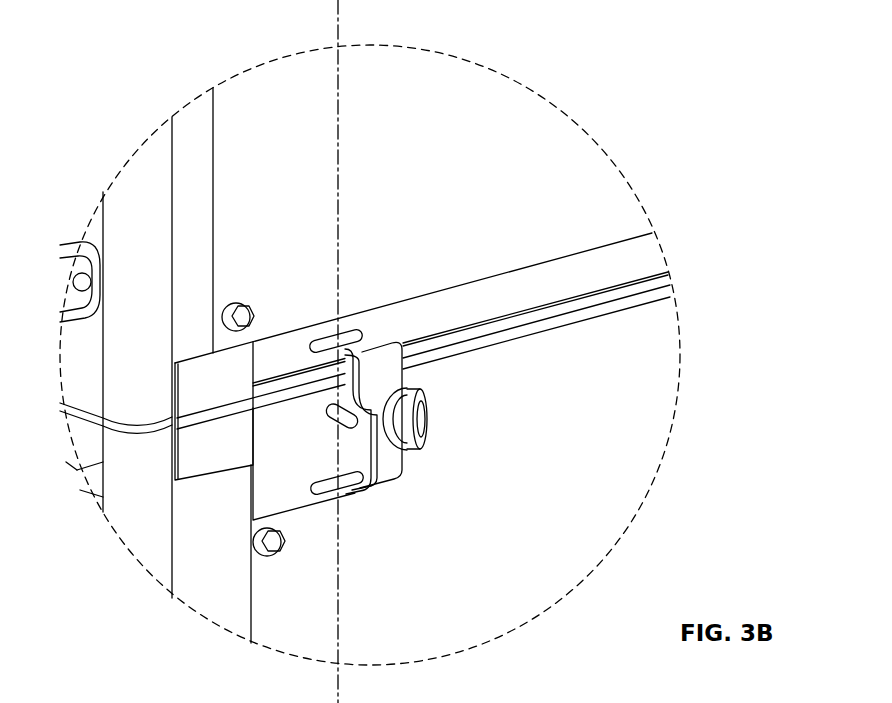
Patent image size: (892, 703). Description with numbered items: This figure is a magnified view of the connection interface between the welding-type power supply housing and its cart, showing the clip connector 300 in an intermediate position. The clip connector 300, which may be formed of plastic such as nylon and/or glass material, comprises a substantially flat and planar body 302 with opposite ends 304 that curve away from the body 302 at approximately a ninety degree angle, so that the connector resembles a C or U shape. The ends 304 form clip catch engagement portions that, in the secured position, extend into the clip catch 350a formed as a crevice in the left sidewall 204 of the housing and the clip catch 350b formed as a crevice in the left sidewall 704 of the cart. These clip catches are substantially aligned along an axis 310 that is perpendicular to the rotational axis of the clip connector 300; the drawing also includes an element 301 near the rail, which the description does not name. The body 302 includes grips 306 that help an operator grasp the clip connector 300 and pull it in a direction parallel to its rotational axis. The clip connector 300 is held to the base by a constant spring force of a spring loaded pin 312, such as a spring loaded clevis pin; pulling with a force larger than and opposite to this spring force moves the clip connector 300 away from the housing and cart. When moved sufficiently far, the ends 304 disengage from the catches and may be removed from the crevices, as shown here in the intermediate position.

The left sidewall 204 is at (538, 112).
The clip connector 300 is at (392, 392).
The rail 301 is at (626, 292).
The body 302 is at (392, 378).
The ends 304 is at (387, 345).
The grips 306 is at (430, 398).
The axis 310 is at (338, 42).
The spring loaded pin 312 is at (327, 412).
The clip catch 350a is at (316, 330).
The clip catch 350b is at (322, 504).
The left sidewall 704 is at (564, 590).